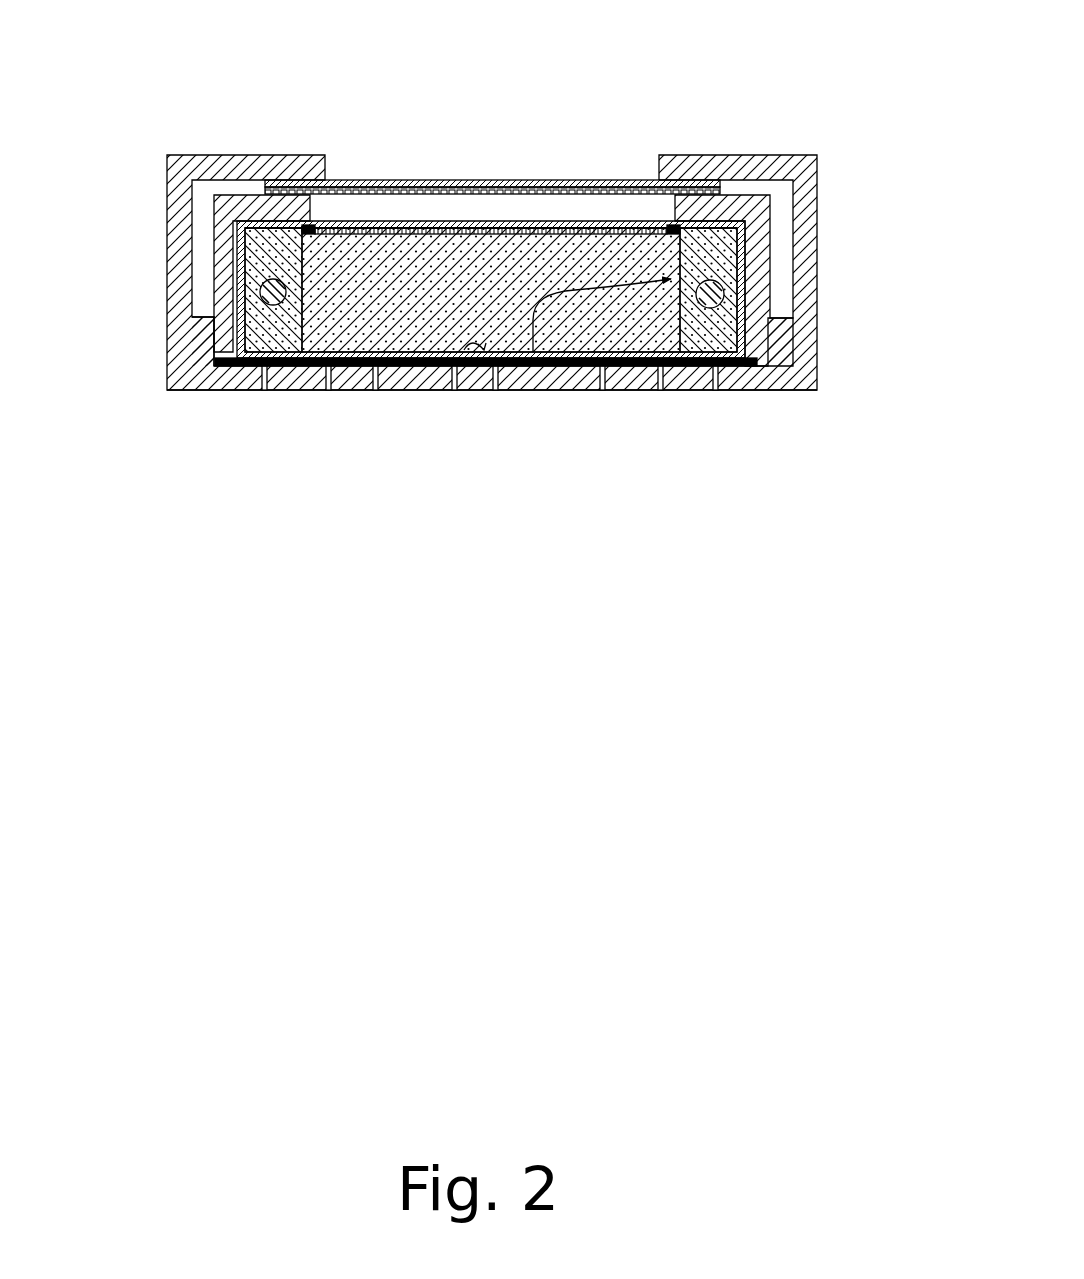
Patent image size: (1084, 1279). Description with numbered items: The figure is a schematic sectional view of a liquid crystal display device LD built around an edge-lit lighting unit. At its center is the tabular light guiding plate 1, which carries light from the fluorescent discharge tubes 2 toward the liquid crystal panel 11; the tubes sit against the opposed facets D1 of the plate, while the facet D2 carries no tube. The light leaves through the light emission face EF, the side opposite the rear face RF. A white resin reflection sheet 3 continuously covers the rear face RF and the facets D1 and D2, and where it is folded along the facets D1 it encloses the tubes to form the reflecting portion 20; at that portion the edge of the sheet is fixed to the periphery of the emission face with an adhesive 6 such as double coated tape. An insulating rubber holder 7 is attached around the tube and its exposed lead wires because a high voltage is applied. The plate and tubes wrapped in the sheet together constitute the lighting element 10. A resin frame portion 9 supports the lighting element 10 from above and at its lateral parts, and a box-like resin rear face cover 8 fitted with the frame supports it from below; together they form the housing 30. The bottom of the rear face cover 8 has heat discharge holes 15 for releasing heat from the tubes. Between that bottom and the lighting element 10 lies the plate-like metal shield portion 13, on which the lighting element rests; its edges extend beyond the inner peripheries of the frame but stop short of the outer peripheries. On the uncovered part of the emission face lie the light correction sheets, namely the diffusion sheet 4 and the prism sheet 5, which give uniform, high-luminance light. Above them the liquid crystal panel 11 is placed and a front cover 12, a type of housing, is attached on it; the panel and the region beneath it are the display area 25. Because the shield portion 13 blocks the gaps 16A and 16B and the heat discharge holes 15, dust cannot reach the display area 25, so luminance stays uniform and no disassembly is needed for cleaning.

The light guiding plate 1 is at (684, 254).
The fluorescent discharge tube 2 is at (723, 291).
The reflection sheet 3 is at (742, 214).
The diffusion sheet 4 is at (465, 227).
The prism sheet 5 is at (403, 222).
The adhesive 6 is at (670, 226).
The rubber holder 7 is at (725, 330).
The rear face cover 8 is at (455, 280).
The frame portion 9 is at (212, 205).
The lighting element 10 is at (555, 265).
The liquid crystal panel 11 is at (492, 127).
The front cover 12 is at (720, 156).
The shield portion 13 is at (651, 390).
The heat discharge holes 15 is at (394, 390).
The gap 16A is at (210, 314).
The gap 16B is at (220, 361).
The reflecting portion 20 is at (251, 257).
The display area 25 is at (360, 177).
The housing 30 is at (441, 279).
The facet D1 is at (306, 330).
The facet D2 is at (535, 390).
The light emission face EF is at (563, 225).
The rear face RF is at (455, 367).
The liquid crystal display device LD is at (495, 285).